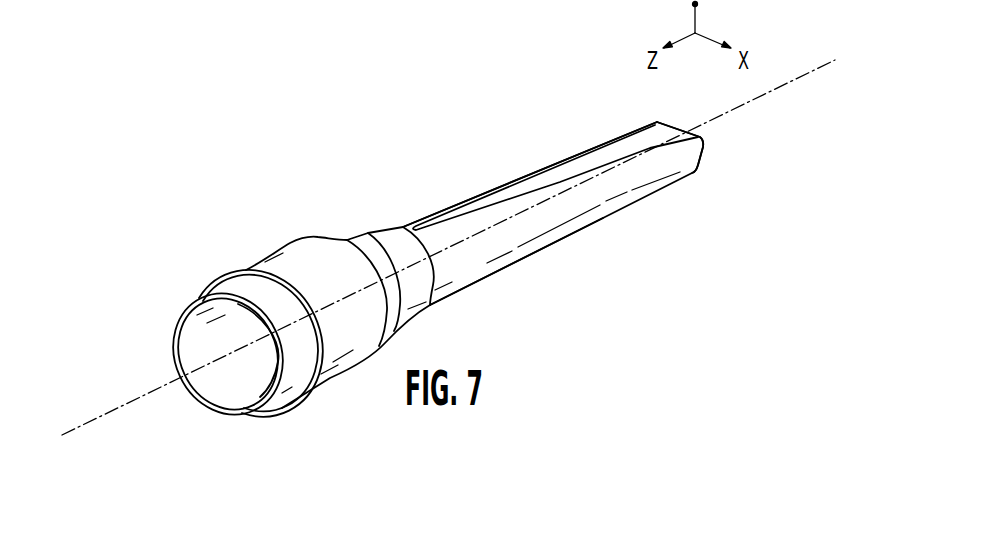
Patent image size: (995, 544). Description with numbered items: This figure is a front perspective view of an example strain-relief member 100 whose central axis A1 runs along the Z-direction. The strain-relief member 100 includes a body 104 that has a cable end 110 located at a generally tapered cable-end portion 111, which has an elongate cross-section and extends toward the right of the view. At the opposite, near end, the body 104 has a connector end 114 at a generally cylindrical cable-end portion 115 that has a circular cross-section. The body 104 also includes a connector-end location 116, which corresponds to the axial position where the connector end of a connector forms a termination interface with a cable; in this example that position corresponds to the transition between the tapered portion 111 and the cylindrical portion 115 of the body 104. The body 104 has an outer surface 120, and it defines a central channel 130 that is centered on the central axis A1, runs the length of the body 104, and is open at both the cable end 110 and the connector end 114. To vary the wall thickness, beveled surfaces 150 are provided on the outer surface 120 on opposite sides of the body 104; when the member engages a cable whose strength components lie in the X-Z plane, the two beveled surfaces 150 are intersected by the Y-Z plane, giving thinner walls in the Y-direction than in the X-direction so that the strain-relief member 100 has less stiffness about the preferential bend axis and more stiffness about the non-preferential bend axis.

The strain-relief member 100 is at (306, 158).
The body 104 is at (376, 226).
The cable end 110 is at (702, 152).
The tapered cable-end portion 111 is at (541, 147).
The connector end 114 is at (183, 310).
The cylindrical cable-end portion 115 is at (271, 234).
The connector-end location 116 is at (342, 232).
The outer surface 120 is at (537, 220).
The central channel 130 is at (233, 385).
The beveled surface 150 is at (632, 140).
The central axis A1 is at (108, 410).